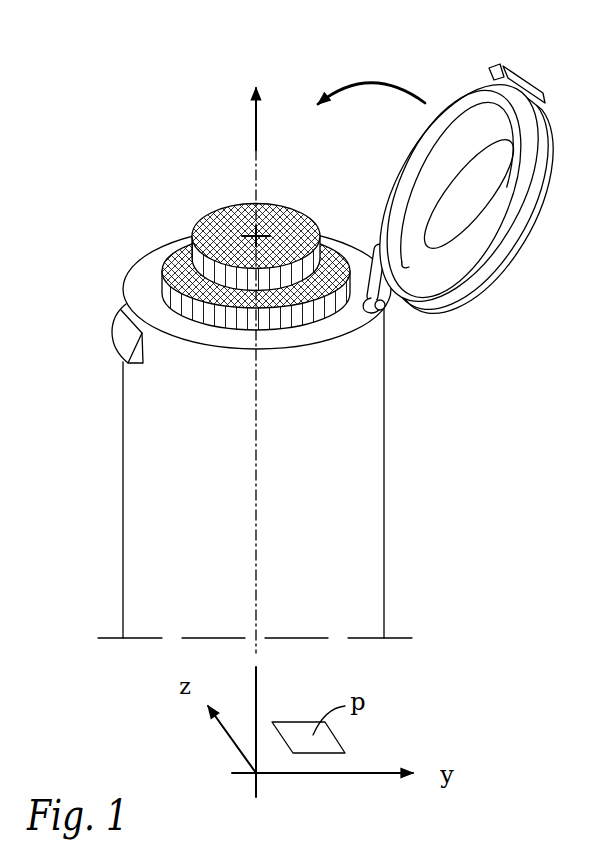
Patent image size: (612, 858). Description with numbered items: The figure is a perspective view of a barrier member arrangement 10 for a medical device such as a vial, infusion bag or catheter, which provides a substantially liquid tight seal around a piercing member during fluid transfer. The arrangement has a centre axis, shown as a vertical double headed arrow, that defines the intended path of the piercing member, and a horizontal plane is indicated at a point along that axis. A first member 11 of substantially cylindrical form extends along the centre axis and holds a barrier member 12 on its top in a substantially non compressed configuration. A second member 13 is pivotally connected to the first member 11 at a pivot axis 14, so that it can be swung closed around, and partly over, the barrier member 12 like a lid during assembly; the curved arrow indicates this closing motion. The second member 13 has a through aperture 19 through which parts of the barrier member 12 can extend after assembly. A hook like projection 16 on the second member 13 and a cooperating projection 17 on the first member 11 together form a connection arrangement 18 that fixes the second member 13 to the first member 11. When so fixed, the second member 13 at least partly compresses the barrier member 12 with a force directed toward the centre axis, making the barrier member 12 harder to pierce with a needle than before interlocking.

The barrier member arrangement 10 is at (304, 332).
The first member 11 is at (342, 423).
The barrier member 12 is at (226, 216).
The second member 13 is at (462, 169).
The pivot axis 14 is at (384, 307).
The hook like projection 16 is at (506, 67).
The cooperating projection 17 is at (118, 327).
The connection arrangement 18 is at (100, 357).
The through aperture 19 is at (446, 189).